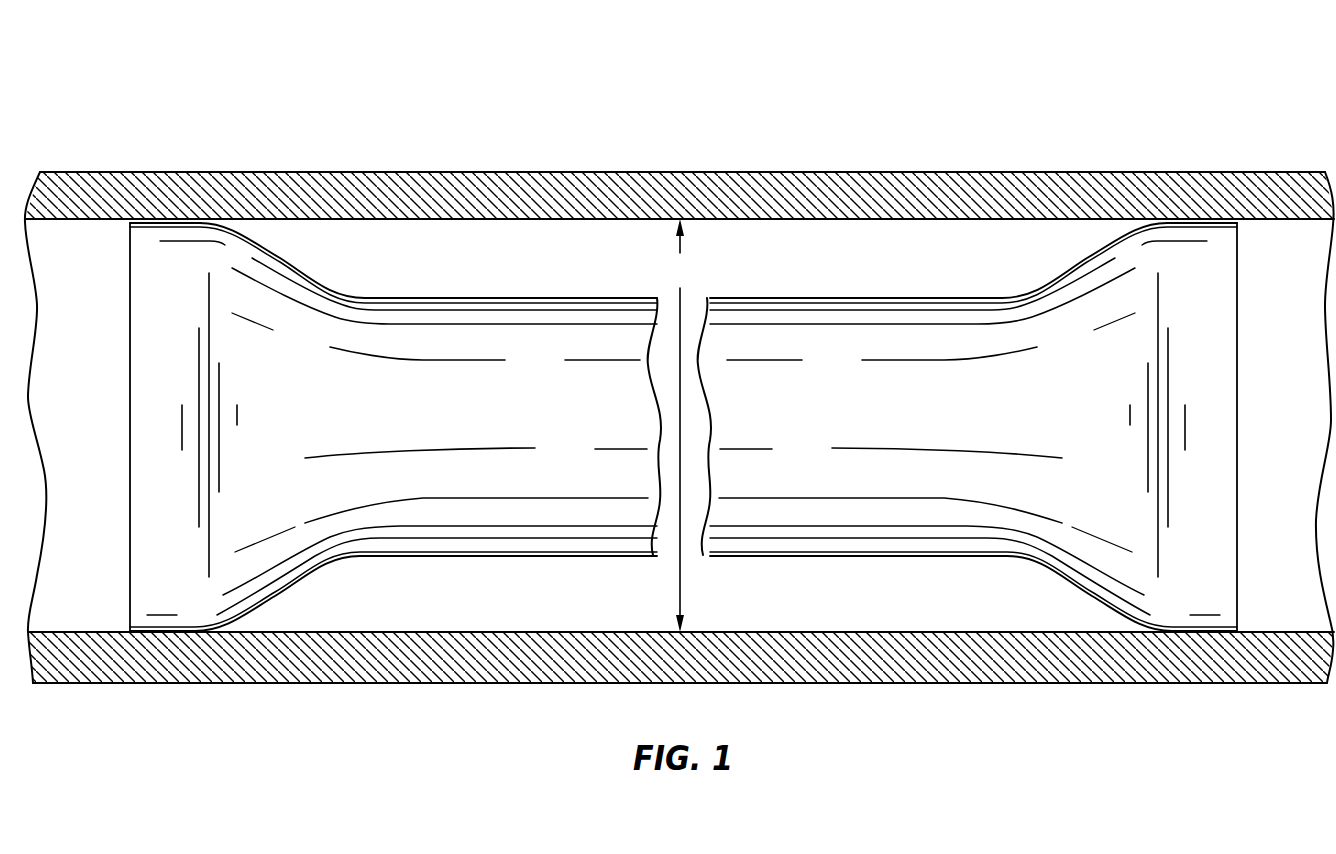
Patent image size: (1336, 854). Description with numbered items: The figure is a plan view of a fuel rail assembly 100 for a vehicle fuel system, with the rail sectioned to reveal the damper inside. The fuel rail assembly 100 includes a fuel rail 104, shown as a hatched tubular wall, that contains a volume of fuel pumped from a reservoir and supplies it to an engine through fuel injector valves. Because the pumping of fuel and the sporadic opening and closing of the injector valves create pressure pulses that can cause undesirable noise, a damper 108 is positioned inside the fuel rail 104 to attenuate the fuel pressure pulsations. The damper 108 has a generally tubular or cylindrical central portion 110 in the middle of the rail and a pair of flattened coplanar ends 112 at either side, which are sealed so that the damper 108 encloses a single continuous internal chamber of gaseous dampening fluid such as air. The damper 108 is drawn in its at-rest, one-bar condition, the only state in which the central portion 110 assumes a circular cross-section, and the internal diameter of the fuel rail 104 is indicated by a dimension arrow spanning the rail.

The fuel rail assembly 100 is at (168, 90).
The fuel rail 104 is at (377, 190).
The damper 108 is at (475, 282).
The central portion 110 is at (842, 318).
The flattened coplanar ends 112 is at (148, 417).